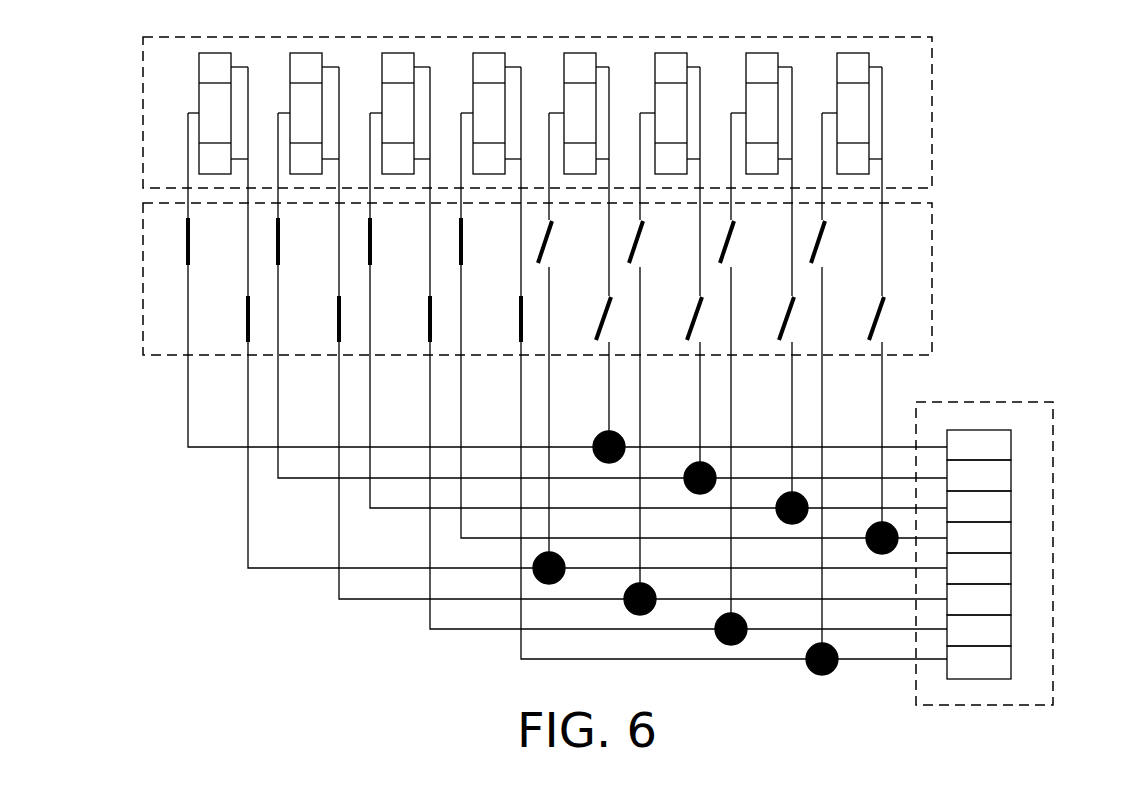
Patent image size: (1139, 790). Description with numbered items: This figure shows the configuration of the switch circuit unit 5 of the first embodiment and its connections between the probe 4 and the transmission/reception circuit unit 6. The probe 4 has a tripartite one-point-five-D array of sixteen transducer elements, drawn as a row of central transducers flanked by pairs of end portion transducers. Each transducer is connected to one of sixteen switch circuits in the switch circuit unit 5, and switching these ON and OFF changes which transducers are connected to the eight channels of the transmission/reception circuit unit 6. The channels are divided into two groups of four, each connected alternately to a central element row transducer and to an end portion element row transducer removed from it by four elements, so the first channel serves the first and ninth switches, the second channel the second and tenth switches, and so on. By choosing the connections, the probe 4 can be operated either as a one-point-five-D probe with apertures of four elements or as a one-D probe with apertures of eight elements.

The probe 4 is at (923, 83).
The switch circuit unit 5 is at (923, 258).
The transmission/reception circuit unit 6 is at (1053, 440).